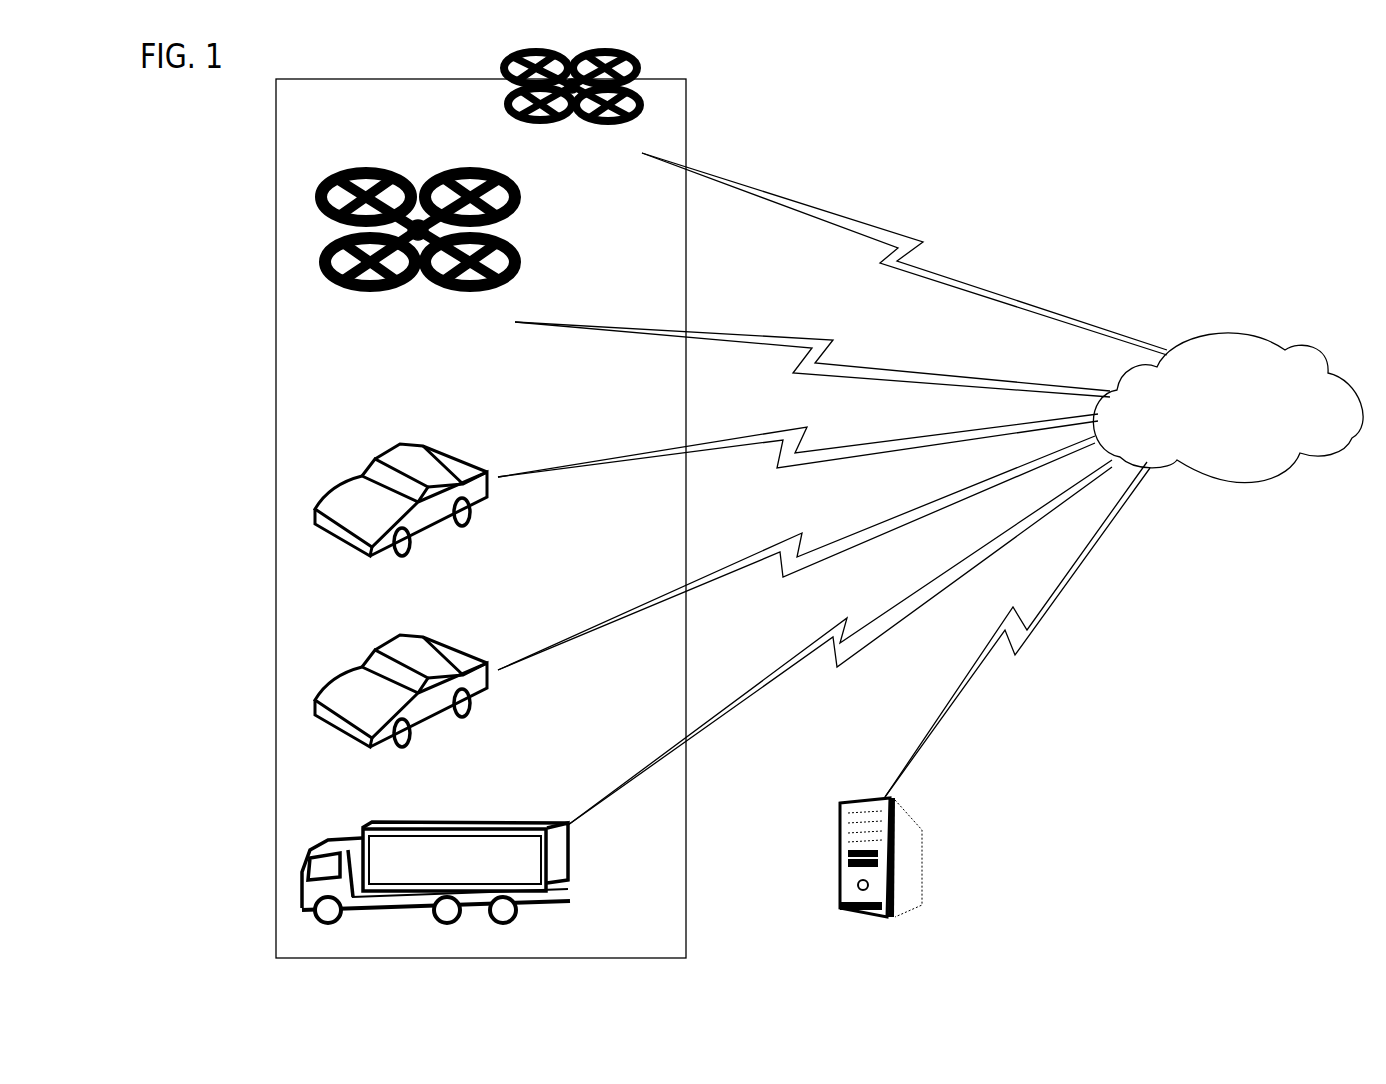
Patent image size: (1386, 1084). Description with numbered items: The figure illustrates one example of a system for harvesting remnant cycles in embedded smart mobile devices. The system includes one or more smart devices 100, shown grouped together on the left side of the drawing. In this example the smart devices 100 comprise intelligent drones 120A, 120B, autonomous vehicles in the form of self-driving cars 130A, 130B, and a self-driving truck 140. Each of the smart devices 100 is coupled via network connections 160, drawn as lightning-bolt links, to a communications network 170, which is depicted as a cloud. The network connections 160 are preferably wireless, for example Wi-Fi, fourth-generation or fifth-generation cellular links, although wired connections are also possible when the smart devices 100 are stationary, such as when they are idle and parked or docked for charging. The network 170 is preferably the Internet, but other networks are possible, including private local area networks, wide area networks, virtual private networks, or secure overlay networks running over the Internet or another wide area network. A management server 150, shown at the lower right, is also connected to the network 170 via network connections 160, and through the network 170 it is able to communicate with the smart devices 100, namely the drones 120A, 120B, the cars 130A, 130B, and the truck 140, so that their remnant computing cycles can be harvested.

The smart devices 100 is at (276, 160).
The intelligent drone 120A is at (563, 158).
The intelligent drone 120B is at (380, 350).
The self-driving car 130A is at (427, 527).
The self-driving car 130B is at (437, 717).
The self-driving truck 140 is at (570, 868).
The management server 150 is at (920, 851).
The network connections 160 is at (898, 200).
The communications network 170 is at (1245, 486).